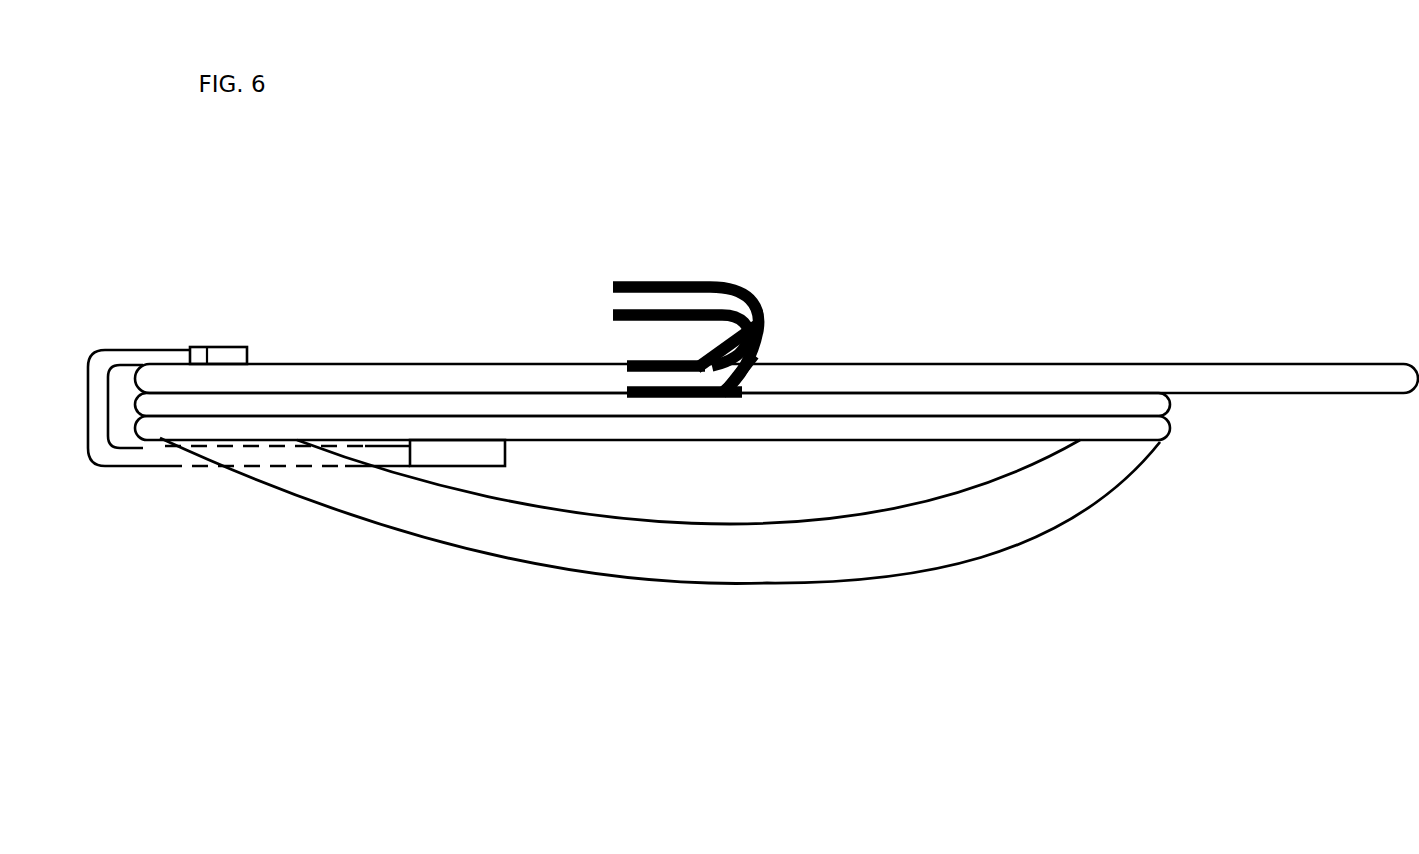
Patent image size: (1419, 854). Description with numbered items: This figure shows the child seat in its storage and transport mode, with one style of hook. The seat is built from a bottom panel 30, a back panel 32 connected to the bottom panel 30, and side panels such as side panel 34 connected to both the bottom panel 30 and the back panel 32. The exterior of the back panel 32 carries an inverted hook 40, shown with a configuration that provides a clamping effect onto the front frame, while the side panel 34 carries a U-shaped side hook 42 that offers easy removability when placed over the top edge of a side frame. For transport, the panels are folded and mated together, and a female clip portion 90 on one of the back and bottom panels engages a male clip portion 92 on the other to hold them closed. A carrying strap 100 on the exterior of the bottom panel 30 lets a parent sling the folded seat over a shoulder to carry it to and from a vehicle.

The bottom panel 30 is at (972, 435).
The back panel 32 is at (912, 367).
The side panel 34 is at (1037, 403).
The inverted hook 40 is at (650, 280).
The inverted hook 42 is at (718, 282).
The female clip portion 90 is at (240, 345).
The male clip portion 92 is at (132, 462).
The carrying strap 100 is at (442, 513).